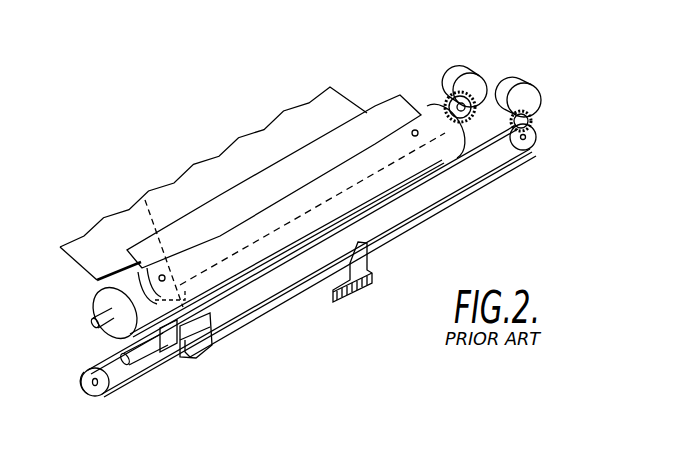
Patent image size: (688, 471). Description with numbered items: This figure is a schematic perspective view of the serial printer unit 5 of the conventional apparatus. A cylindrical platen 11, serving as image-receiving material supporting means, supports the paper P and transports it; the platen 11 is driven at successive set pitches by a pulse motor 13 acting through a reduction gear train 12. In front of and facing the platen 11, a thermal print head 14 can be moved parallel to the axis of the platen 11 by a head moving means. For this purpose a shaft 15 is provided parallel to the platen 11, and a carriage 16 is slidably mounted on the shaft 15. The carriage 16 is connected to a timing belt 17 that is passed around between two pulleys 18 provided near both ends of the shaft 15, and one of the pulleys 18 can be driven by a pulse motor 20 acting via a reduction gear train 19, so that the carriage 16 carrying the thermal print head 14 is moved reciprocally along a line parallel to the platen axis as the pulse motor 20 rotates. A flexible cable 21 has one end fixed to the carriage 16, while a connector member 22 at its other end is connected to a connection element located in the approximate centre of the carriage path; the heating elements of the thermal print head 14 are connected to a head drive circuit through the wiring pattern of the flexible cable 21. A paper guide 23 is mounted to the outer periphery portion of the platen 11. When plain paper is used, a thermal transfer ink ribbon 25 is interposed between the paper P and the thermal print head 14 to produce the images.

The serial printer unit 5 is at (431, 66).
The cylindrical platen 11 is at (102, 302).
The reduction gear train 12 is at (443, 87).
The pulse motor 13 is at (473, 78).
The thermal print head 14 is at (150, 220).
The shaft 15 is at (153, 363).
The carriage 16 is at (190, 350).
The timing belt 17 is at (123, 380).
The pulleys 18 is at (528, 140).
The reduction gear train 19 is at (540, 123).
The pulse motor 20 is at (517, 88).
The flexible cable 21 is at (272, 305).
The connector member 22 is at (360, 295).
The paper guide 23 is at (315, 187).
The thermal transfer ink ribbon 25 is at (125, 330).
The paper P is at (100, 236).